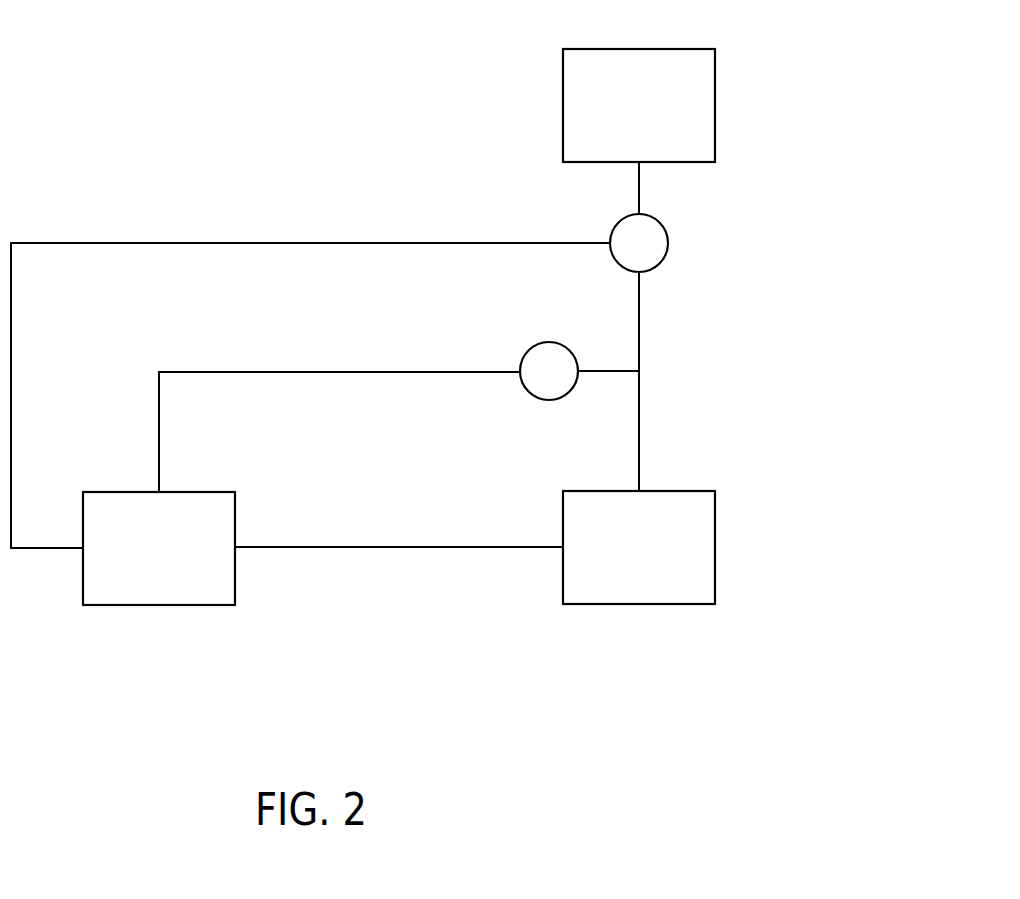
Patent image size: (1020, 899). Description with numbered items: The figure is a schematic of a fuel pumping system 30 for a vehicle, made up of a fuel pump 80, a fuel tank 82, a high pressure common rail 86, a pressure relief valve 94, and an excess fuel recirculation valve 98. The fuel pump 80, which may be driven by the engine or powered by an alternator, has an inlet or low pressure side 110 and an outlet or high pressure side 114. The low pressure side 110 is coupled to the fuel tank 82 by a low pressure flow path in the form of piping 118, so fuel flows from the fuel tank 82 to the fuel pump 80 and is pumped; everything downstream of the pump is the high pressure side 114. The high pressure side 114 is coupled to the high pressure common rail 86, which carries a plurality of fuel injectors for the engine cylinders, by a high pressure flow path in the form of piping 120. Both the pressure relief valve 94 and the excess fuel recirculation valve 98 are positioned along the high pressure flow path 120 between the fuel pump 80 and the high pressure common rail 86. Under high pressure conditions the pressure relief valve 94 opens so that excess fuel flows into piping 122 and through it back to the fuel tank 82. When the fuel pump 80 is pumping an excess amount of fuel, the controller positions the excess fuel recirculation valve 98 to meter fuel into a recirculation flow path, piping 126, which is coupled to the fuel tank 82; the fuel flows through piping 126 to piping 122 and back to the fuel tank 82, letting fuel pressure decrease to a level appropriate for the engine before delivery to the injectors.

The fuel pumping system 30 is at (110, 91).
The fuel pump 80 is at (703, 508).
The fuel tank 82 is at (92, 507).
The high pressure common rail 86 is at (703, 65).
The pressure relief valve 94 is at (662, 220).
The excess fuel recirculation valve 98 is at (566, 350).
The low pressure side 110 is at (555, 490).
The high pressure side 114 is at (660, 471).
The piping 118 is at (370, 547).
The piping 120 is at (641, 360).
The piping 122 is at (312, 243).
The piping 126 is at (358, 373).